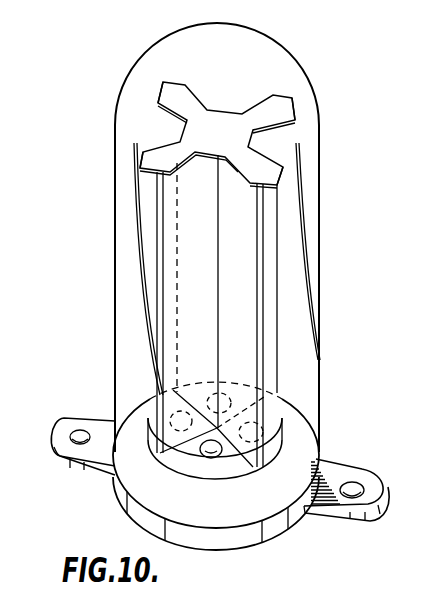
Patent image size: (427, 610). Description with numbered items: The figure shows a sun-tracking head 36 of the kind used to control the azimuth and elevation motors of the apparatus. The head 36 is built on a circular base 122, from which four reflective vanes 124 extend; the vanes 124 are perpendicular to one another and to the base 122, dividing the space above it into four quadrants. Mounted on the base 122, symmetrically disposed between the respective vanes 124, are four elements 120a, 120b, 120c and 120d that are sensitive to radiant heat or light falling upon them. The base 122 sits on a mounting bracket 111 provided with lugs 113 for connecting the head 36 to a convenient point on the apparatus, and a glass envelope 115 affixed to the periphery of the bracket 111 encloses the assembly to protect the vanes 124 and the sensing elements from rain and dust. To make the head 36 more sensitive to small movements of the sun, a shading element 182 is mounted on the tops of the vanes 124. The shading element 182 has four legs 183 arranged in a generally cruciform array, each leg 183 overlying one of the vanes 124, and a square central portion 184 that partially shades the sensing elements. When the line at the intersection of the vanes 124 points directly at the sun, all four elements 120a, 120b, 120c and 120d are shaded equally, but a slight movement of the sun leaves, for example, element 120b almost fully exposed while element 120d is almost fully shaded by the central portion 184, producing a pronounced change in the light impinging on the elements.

The tracking head 36 is at (300, 44).
The glass envelope 115 is at (320, 232).
The shading element 182 is at (196, 88).
The central portion 184 is at (222, 122).
The legs 183 is at (172, 95).
The reflective vanes 124 is at (167, 322).
The base 111 is at (268, 528).
The circular base 122 is at (277, 427).
The element sensitive to radiant heat or light 120a is at (262, 438).
The element sensitive to radiant heat or light 120b is at (318, 382).
The element sensitive to radiant heat or light 120c is at (172, 419).
The element sensitive to radiant heat or light 120d is at (208, 452).
The lugs 113 is at (82, 468).